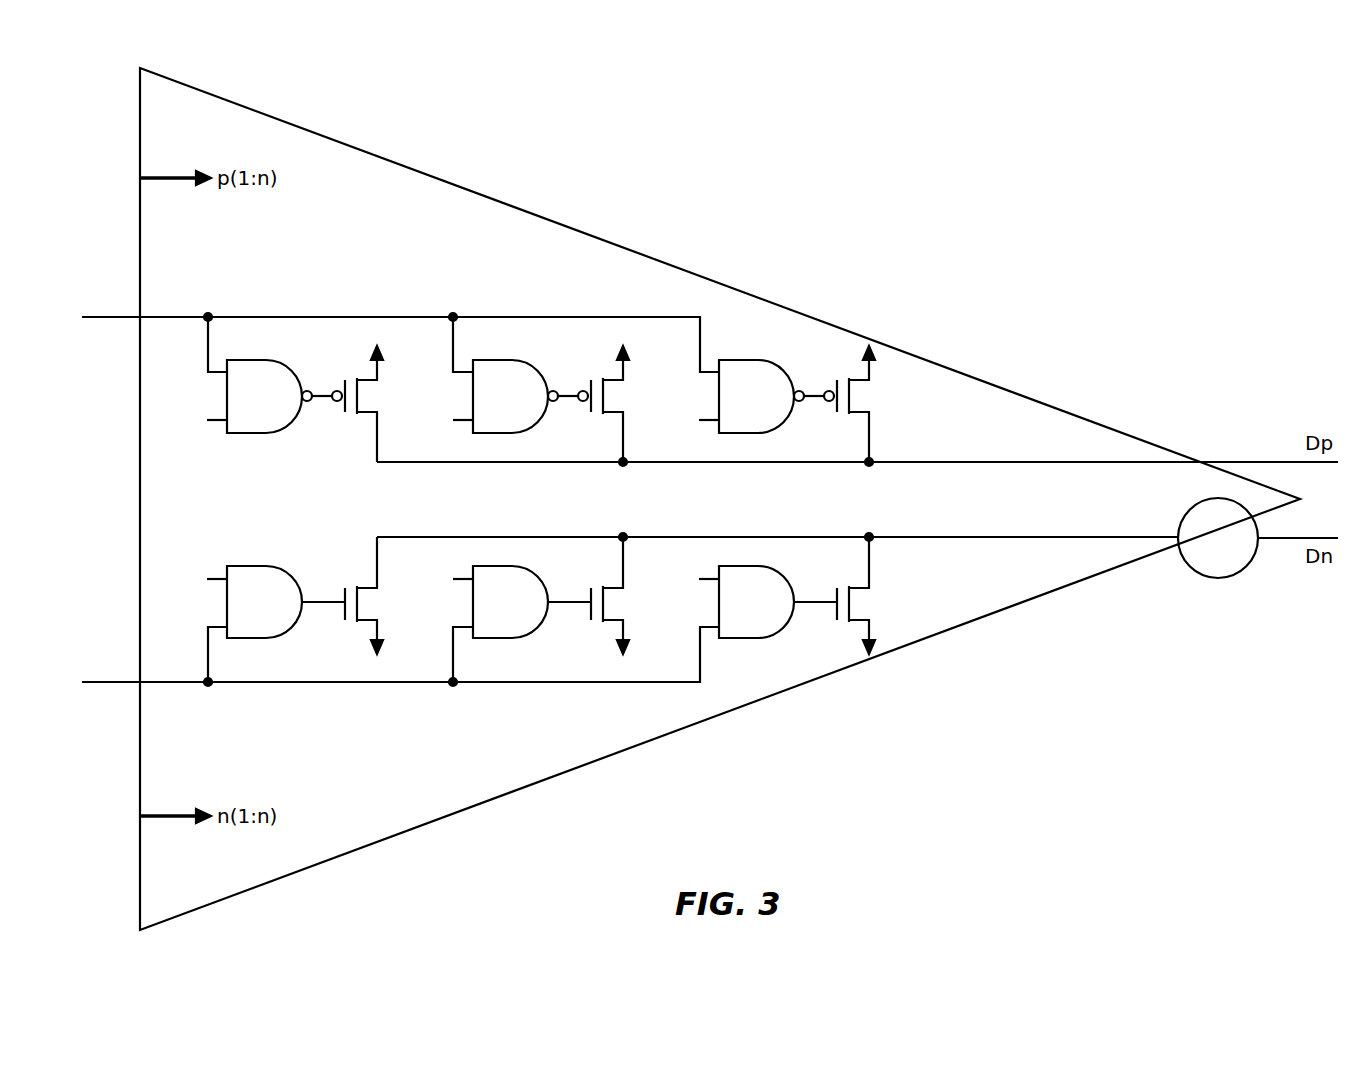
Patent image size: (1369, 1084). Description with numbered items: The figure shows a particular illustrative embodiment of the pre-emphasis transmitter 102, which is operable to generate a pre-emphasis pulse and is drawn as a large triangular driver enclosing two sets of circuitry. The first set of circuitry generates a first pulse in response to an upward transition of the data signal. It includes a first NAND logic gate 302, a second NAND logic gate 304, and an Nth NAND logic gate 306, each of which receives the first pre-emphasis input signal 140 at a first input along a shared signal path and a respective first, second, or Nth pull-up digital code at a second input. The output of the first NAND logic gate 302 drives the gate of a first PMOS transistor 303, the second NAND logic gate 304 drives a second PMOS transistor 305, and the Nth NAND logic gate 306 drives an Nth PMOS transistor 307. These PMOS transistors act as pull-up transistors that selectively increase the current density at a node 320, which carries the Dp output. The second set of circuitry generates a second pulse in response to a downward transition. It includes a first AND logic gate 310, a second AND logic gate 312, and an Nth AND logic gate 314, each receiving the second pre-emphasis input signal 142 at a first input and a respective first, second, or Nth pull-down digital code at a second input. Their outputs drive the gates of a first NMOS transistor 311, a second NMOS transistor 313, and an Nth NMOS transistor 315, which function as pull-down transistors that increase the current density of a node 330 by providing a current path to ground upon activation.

The pre-emphasis transmitter 102 is at (998, 194).
The first pre-emphasis input signal 140 is at (108, 317).
The second pre-emphasis input signal 142 is at (108, 682).
The first NAND logic gate 302 is at (257, 360).
The first PMOS transistor 303 is at (360, 415).
The second NAND logic gate 304 is at (503, 360).
The second PMOS transistor 305 is at (606, 415).
The Nth NAND logic gate 306 is at (749, 360).
The Nth PMOS transistor 307 is at (852, 415).
The first AND logic gate 310 is at (257, 638).
The first NMOS transistor 311 is at (360, 586).
The second AND logic gate 312 is at (503, 638).
The second NMOS transistor 313 is at (606, 586).
The Nth AND logic gate 314 is at (749, 638).
The Nth NMOS transistor 315 is at (852, 586).
The node 320 is at (720, 463).
The node 330 is at (545, 537).